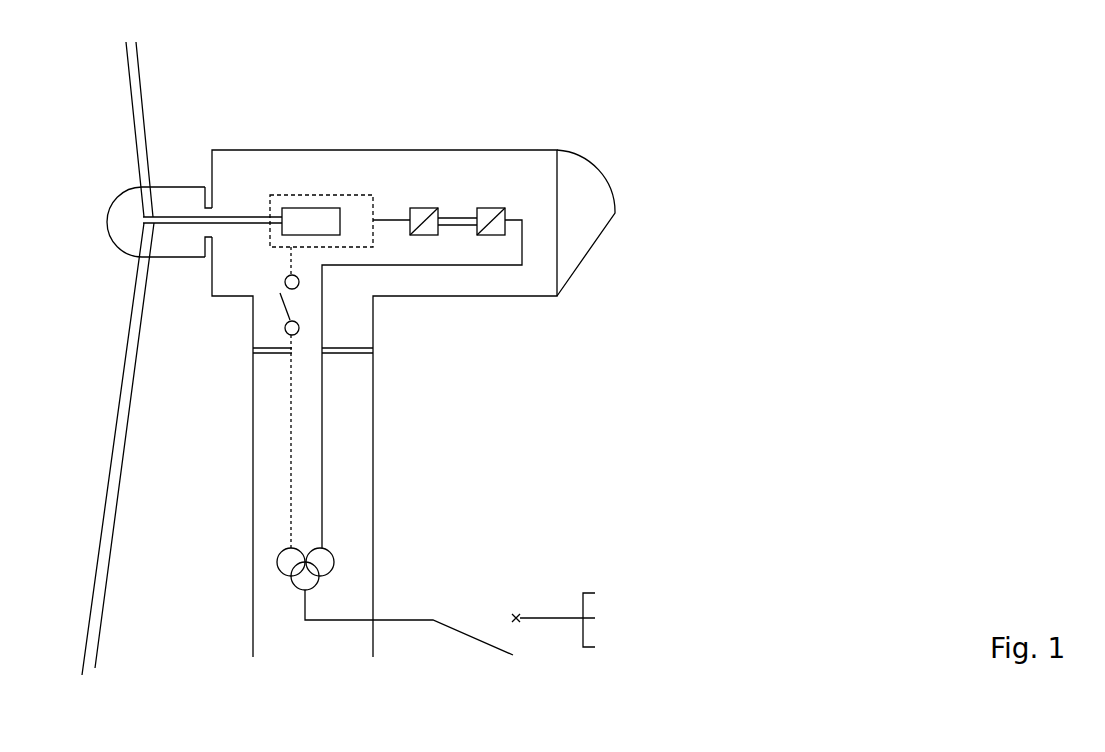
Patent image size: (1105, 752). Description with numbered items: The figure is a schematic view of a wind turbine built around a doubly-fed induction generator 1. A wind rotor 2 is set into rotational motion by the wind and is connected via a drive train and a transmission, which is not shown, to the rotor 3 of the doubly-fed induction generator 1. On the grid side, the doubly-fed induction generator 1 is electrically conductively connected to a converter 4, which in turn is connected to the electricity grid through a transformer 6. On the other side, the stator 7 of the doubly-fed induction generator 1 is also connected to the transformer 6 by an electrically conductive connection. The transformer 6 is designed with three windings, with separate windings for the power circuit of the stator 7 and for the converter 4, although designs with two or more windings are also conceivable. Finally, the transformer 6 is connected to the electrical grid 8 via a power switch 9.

The doubly-fed induction generator 1 is at (397, 179).
The wind rotor 2 is at (165, 119).
The rotor 3 is at (308, 220).
The converter 4 is at (425, 237).
The transformer 6 is at (323, 558).
The stator 7 is at (364, 192).
The electrical grid 8 is at (556, 642).
The power switch 9 is at (452, 650).